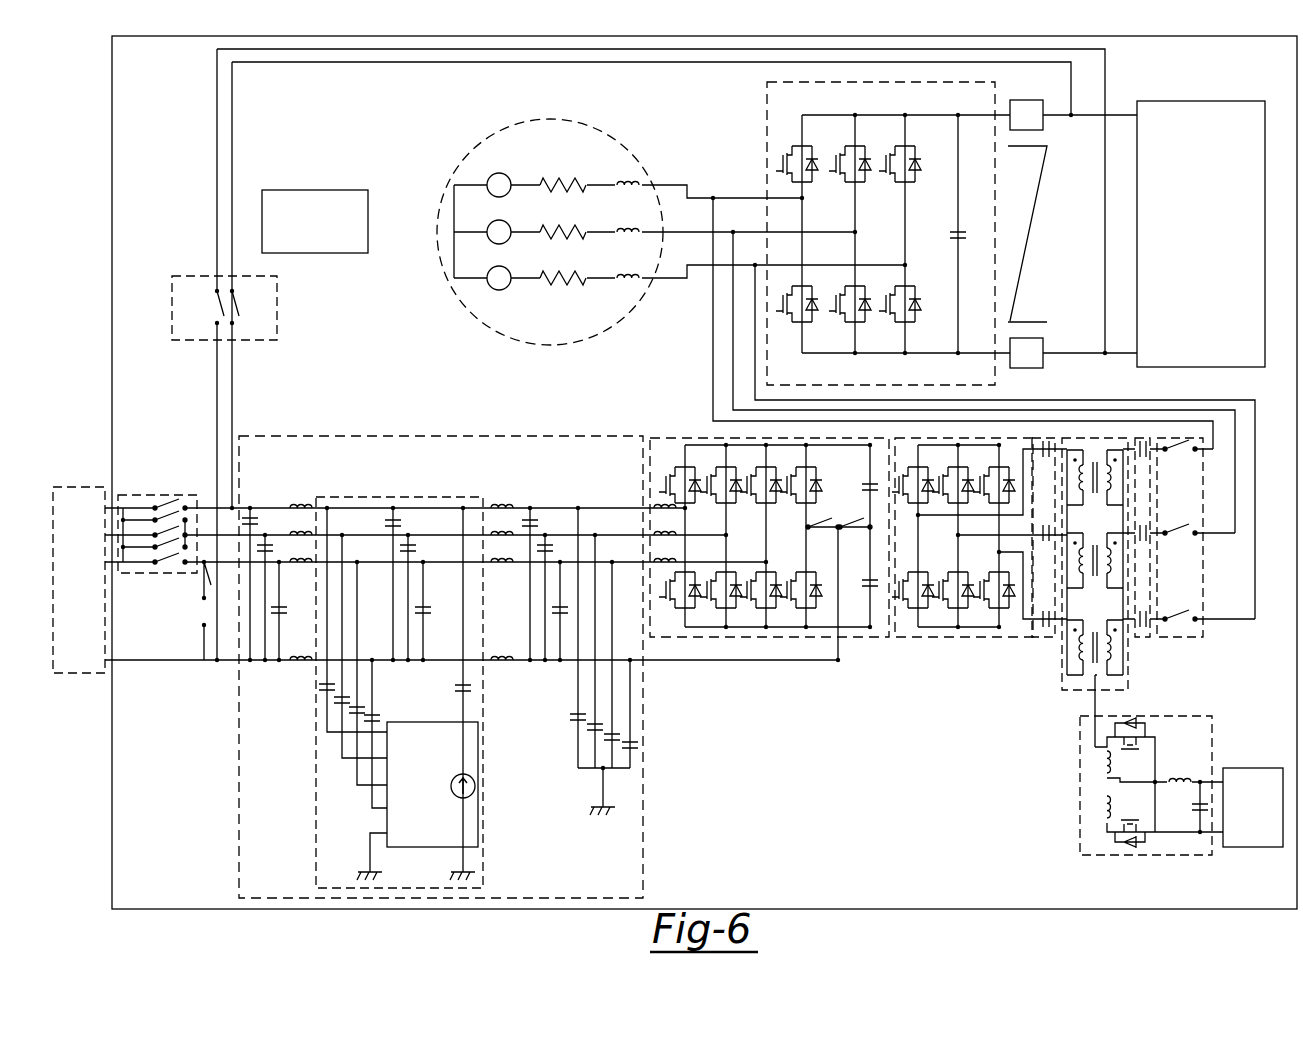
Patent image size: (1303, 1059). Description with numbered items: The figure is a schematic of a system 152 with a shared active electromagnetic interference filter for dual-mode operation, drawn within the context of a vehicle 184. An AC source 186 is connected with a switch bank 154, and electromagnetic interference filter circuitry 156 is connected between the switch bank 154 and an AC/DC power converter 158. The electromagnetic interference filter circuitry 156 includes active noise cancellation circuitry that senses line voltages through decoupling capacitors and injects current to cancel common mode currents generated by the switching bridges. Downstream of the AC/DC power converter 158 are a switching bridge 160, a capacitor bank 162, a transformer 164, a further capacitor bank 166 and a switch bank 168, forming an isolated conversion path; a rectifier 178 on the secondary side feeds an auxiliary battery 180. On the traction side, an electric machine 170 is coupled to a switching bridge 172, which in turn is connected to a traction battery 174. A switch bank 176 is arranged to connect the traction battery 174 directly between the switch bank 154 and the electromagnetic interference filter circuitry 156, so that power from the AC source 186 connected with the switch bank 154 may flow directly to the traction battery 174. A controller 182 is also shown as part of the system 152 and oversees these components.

The system 152 is at (196, 112).
The switch bank 154 is at (157, 495).
The electromagnetic interference filter circuitry 156 is at (440, 436).
The AC/DC power converter 158 is at (680, 438).
The switching bridge 160 is at (962, 638).
The capacitor bank 162 is at (1045, 638).
The transformer 164 is at (1070, 690).
The capacitor bank 166 is at (1141, 638).
The switch bank 168 is at (1181, 638).
The electric machine 170 is at (552, 346).
The switching bridge 172 is at (767, 118).
The traction battery 174 is at (1200, 101).
The switch bank 176 is at (281, 306).
The rectifier 178 is at (1080, 787).
The auxiliary battery 180 is at (1255, 768).
The controller 182 is at (316, 190).
The vehicle 184 is at (112, 130).
The AC source 186 is at (80, 487).